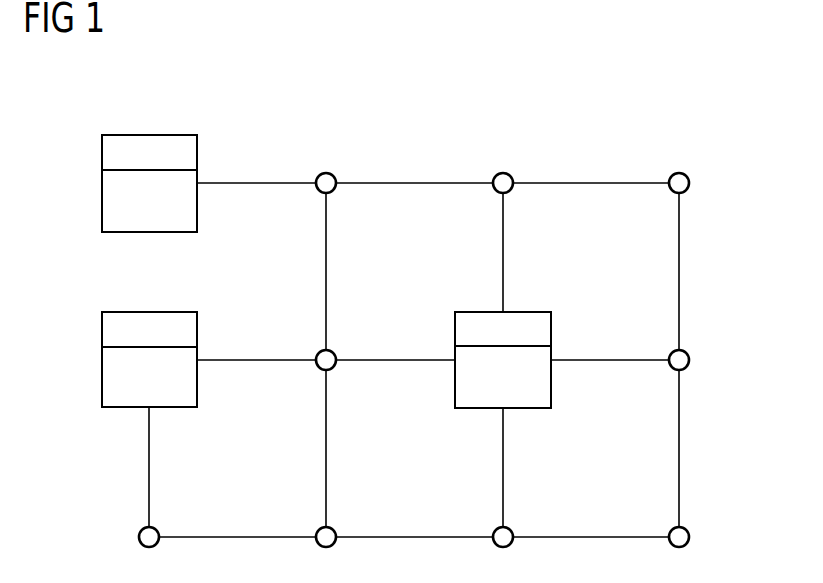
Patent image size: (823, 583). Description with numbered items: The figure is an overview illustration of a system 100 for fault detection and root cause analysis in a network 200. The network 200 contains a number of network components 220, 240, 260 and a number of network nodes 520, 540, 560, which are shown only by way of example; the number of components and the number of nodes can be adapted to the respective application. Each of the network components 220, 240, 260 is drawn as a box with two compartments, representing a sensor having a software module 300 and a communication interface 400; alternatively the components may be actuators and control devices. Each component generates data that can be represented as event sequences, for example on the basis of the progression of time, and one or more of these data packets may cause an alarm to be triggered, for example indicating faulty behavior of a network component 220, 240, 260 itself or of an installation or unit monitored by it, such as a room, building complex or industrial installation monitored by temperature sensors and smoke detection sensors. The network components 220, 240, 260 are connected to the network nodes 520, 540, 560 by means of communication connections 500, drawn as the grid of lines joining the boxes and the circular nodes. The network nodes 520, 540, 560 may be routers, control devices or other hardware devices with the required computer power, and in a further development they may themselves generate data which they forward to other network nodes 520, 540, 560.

The system 100 is at (650, 115).
The network 200 is at (320, 254).
The network component 220 is at (138, 135).
The network component 240 is at (121, 407).
The network component 260 is at (473, 408).
The software module 300 is at (188, 200).
The communication interface 400 is at (188, 152).
The communication connection 500 is at (680, 450).
The network node 520 is at (333, 176).
The network node 540 is at (333, 352).
The network node 560 is at (510, 176).